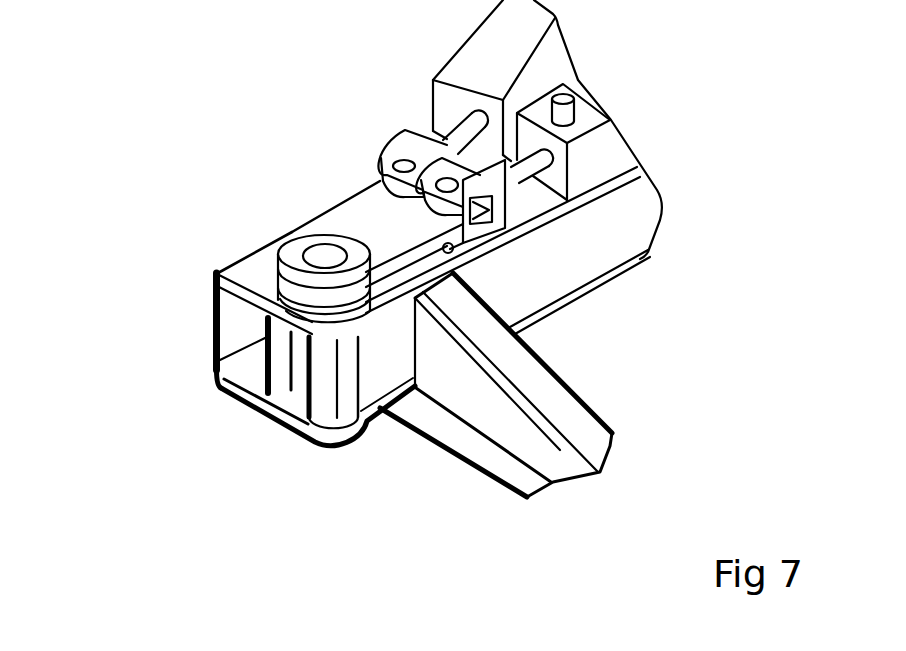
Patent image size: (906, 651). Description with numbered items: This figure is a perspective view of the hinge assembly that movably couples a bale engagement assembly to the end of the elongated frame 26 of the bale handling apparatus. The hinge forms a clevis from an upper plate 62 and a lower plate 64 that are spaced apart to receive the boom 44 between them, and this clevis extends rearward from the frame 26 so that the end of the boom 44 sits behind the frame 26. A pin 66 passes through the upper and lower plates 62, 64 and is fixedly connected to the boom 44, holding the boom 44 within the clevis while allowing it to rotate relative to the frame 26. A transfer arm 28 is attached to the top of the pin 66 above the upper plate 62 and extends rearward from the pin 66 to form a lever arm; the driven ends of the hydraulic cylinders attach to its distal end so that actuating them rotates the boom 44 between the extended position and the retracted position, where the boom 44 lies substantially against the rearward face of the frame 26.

The elongated frame 26 is at (168, 328).
The transfer arm 28 is at (370, 162).
The boom 44 is at (543, 248).
The upper plate 62 is at (237, 235).
The lower plate 64 is at (266, 447).
The pin 66 is at (356, 475).